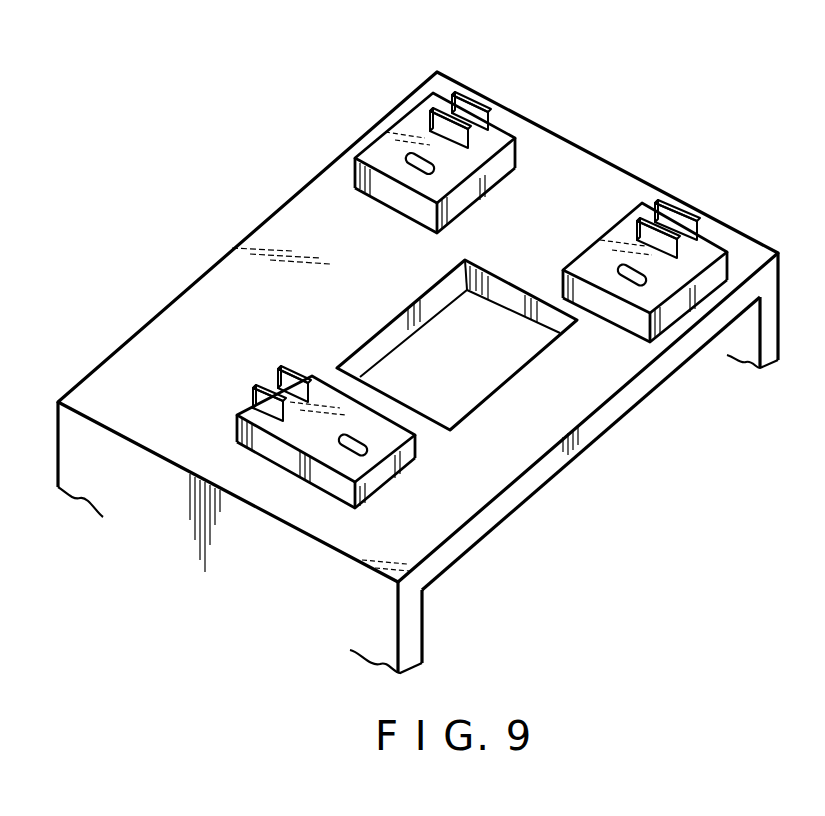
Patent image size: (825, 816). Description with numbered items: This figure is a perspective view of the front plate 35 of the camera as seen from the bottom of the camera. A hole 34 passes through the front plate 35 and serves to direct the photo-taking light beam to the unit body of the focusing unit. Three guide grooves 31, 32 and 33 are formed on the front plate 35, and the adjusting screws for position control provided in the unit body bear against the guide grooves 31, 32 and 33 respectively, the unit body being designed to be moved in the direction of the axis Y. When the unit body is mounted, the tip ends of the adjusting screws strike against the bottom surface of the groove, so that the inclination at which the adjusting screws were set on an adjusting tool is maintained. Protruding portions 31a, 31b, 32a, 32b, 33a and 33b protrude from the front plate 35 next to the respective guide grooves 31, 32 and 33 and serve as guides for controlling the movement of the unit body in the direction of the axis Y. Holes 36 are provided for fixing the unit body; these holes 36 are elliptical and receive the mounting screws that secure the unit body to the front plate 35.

The guide groove 31 is at (659, 205).
The protruding portion 31a is at (677, 210).
The protruding portion 31b is at (677, 245).
The guide groove 32 is at (283, 367).
The protruding portion 32a is at (292, 371).
The protruding portion 32b is at (255, 387).
The guide groove 33 is at (461, 98).
The protruding portion 33a is at (483, 104).
The protruding portion 33b is at (473, 138).
The hole 34 is at (492, 375).
The front plate 35 is at (595, 425).
The holes for fixing the unit body 36 is at (423, 173).